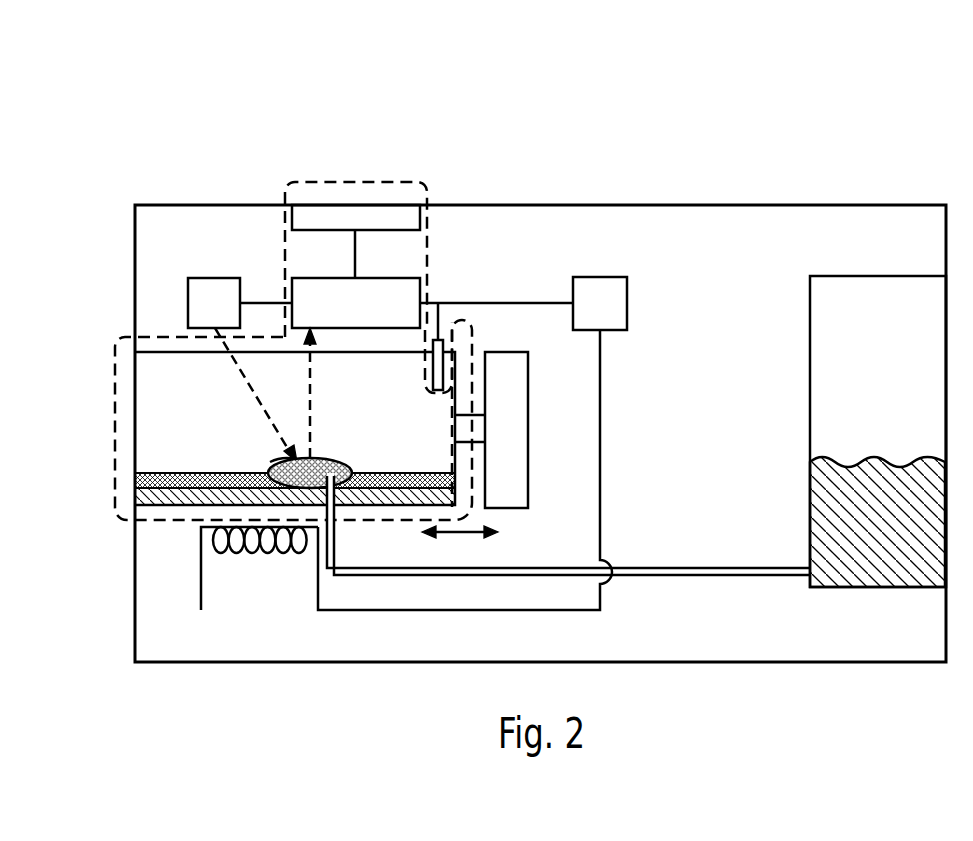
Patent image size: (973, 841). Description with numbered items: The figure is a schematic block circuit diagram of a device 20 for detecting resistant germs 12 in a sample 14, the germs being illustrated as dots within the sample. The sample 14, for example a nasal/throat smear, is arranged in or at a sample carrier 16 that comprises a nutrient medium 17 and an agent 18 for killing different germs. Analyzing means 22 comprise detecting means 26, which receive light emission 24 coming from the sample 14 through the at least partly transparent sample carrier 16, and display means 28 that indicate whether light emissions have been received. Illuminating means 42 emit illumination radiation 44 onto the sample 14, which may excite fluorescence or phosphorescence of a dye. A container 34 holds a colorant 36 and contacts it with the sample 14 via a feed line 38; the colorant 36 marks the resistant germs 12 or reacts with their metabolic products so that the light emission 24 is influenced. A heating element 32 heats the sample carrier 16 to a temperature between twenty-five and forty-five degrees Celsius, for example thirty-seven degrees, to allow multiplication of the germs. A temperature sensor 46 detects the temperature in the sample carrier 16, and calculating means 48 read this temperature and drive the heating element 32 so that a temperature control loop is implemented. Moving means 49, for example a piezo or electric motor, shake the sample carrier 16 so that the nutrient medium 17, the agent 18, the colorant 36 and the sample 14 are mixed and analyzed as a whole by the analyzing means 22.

The device 20 is at (925, 122).
The analyzing means 22 is at (429, 218).
The detecting means 26 is at (373, 278).
The display means 28 is at (338, 232).
The illuminating means 42 is at (215, 278).
The illumination radiation 44 is at (240, 372).
The light emission 24 is at (313, 380).
The sample carrier 16 is at (155, 352).
The nutrient medium 17 is at (387, 473).
The agent 18 is at (165, 487).
The resistant germs 12 is at (288, 468).
The sample 14 is at (282, 460).
The temperature sensor 46 is at (437, 393).
The calculating means 48 is at (600, 277).
The moving means 49 is at (528, 422).
The container 34 is at (823, 350).
The colorant 36 is at (823, 520).
The feed line 38 is at (665, 566).
The heating element 32 is at (273, 558).